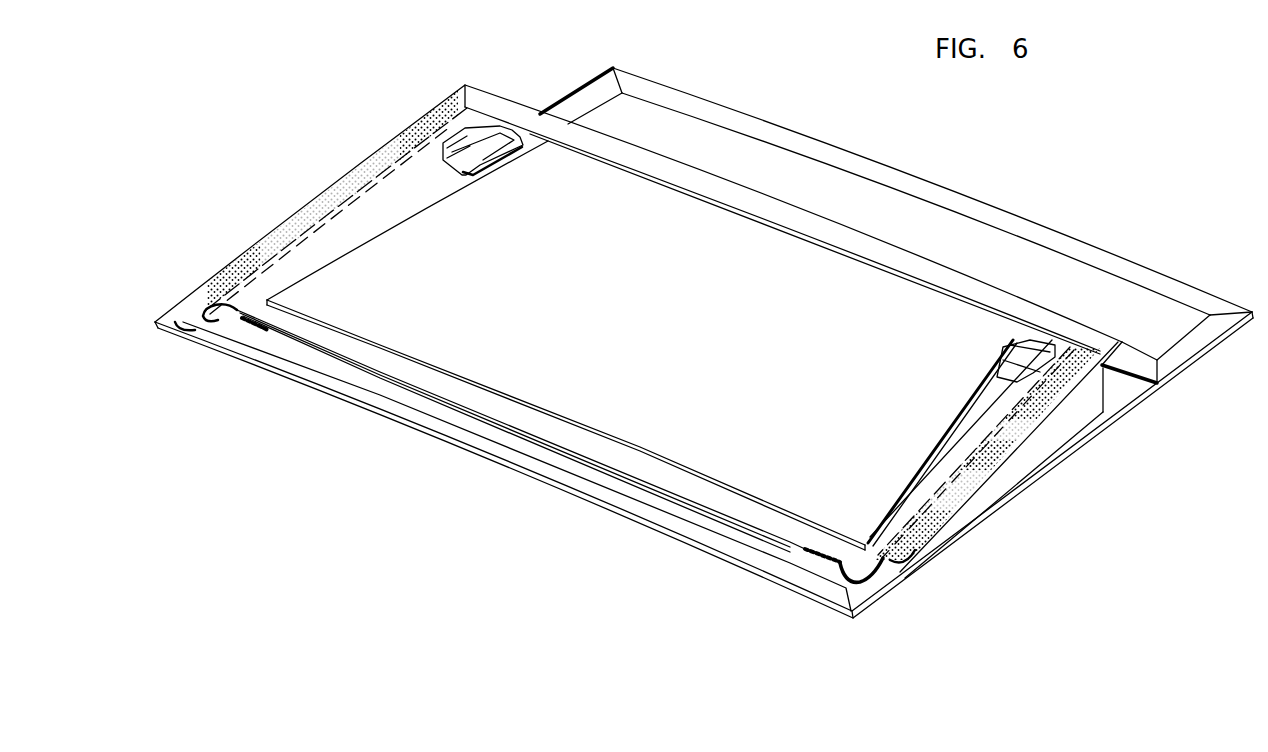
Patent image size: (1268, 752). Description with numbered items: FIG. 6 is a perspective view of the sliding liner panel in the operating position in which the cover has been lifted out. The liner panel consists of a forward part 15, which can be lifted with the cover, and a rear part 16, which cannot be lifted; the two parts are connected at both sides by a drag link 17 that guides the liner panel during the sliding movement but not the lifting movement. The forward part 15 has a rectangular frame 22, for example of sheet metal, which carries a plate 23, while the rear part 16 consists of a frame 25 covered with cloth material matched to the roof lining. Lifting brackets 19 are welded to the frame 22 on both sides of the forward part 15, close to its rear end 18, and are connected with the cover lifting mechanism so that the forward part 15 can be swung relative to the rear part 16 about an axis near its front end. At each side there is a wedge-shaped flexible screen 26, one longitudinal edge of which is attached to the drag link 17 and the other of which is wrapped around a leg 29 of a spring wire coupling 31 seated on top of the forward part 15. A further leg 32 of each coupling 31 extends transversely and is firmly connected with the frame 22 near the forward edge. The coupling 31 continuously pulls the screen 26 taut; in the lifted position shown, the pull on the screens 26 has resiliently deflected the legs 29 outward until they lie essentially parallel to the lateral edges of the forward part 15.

The forward part 15 is at (370, 128).
The rear part 16 is at (790, 170).
The drag link 17 is at (1142, 412).
The rear end 18 is at (520, 115).
The lifting brackets 19 is at (492, 140).
The rectangular frame 22 is at (182, 304).
The plate 23 is at (410, 325).
The frame 25 is at (708, 108).
The screen 26 is at (313, 215).
The leg 29 is at (213, 292).
The spring wire coupling 31 is at (180, 337).
The leg 32 is at (258, 330).